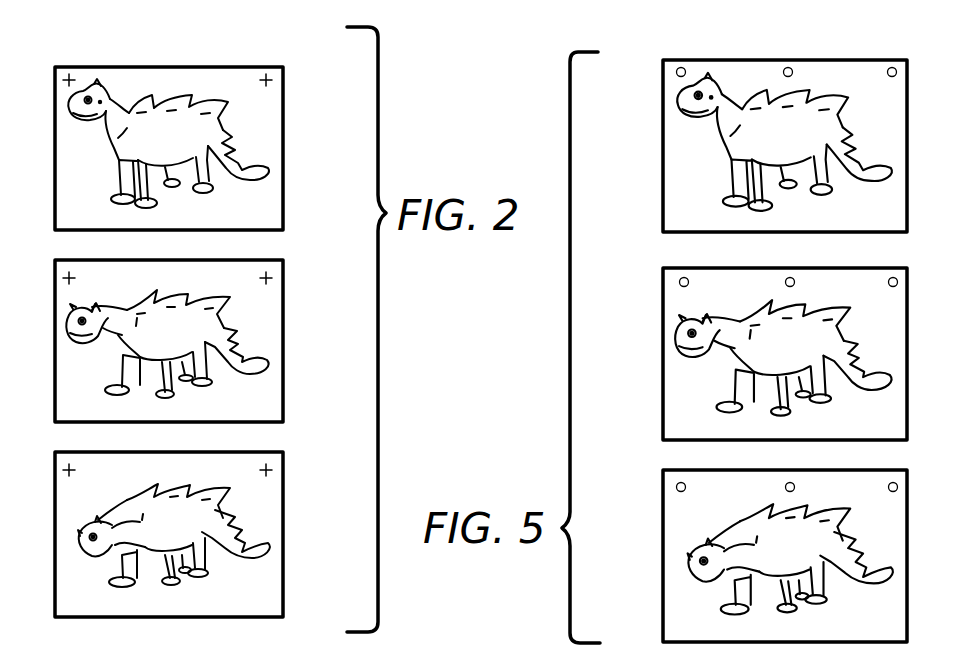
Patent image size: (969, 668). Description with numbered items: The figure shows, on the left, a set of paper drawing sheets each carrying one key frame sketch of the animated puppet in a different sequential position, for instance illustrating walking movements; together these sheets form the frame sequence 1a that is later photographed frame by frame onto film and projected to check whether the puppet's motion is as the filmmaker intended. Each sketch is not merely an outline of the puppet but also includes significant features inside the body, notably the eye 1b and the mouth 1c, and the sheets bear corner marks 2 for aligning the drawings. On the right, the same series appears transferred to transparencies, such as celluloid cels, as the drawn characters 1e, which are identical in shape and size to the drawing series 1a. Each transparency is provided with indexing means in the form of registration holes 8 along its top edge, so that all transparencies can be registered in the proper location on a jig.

In FIG. 2, the registration marks 2 is at (70, 78).
In FIG. 2, the frame sequence 1a is at (203, 132).
In FIG. 2, the eye 1b is at (92, 88).
In FIG. 2, the mouth 1c is at (80, 122).
In FIG. 5, the registration holes 8 is at (785, 68).
In FIG. 5, the drawn characters 1e is at (748, 136).